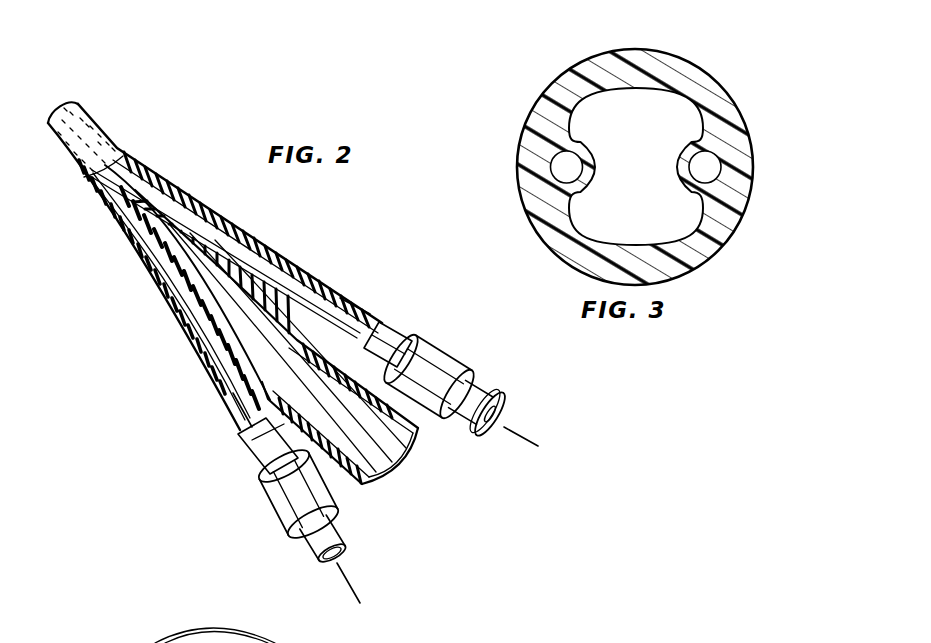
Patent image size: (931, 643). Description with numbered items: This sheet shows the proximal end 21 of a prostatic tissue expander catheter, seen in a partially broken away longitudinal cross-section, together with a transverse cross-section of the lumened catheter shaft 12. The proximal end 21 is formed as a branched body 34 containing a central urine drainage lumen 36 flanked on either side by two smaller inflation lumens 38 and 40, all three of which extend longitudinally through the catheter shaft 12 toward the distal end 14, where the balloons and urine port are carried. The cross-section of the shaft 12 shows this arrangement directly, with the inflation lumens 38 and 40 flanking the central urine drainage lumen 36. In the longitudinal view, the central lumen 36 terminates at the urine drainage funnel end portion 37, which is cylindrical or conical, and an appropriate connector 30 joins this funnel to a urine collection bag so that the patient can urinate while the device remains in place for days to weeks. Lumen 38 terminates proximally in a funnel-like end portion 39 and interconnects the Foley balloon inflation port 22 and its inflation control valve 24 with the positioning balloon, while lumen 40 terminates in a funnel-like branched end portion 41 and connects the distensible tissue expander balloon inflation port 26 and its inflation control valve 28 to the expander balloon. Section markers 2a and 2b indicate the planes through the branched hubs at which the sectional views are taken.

In FIG. 3, the catheter shaft 12 is at (721, 74).
In FIG. 2, the distal end 14 is at (470, 642).
In FIG. 2, the proximal end 21 is at (313, 264).
In FIG. 2, the Foley balloon inflation port 22 is at (350, 557).
In FIG. 2, the inflation control valve 24 is at (283, 491).
In FIG. 2, the distensible tissue expander balloon inflation port 26 is at (498, 434).
In FIG. 2, the inflation control valve 28 is at (434, 357).
In FIG. 2, the connector 30 is at (420, 458).
In FIG. 2, the branched body 34 is at (160, 181).
In FIG. 2, the central urine drainage lumen 36 is at (178, 235).
In FIG. 3, the central urine drainage lumen 36 is at (650, 178).
In FIG. 2, the urine drainage funnel end portion 37 is at (393, 478).
In FIG. 2, the inflation lumen 38 is at (206, 336).
In FIG. 3, the inflation lumen 38 is at (558, 167).
In FIG. 2, the funnel-like end portion 39 is at (253, 453).
In FIG. 2, the inflation lumen 40 is at (250, 260).
In FIG. 3, the inflation lumen 40 is at (705, 160).
In FIG. 2, the funnel-like branched end portion 41 is at (400, 340).
In FIG. 2, the section line 2a is at (352, 312).
In FIG. 2, the section line 2b is at (230, 409).